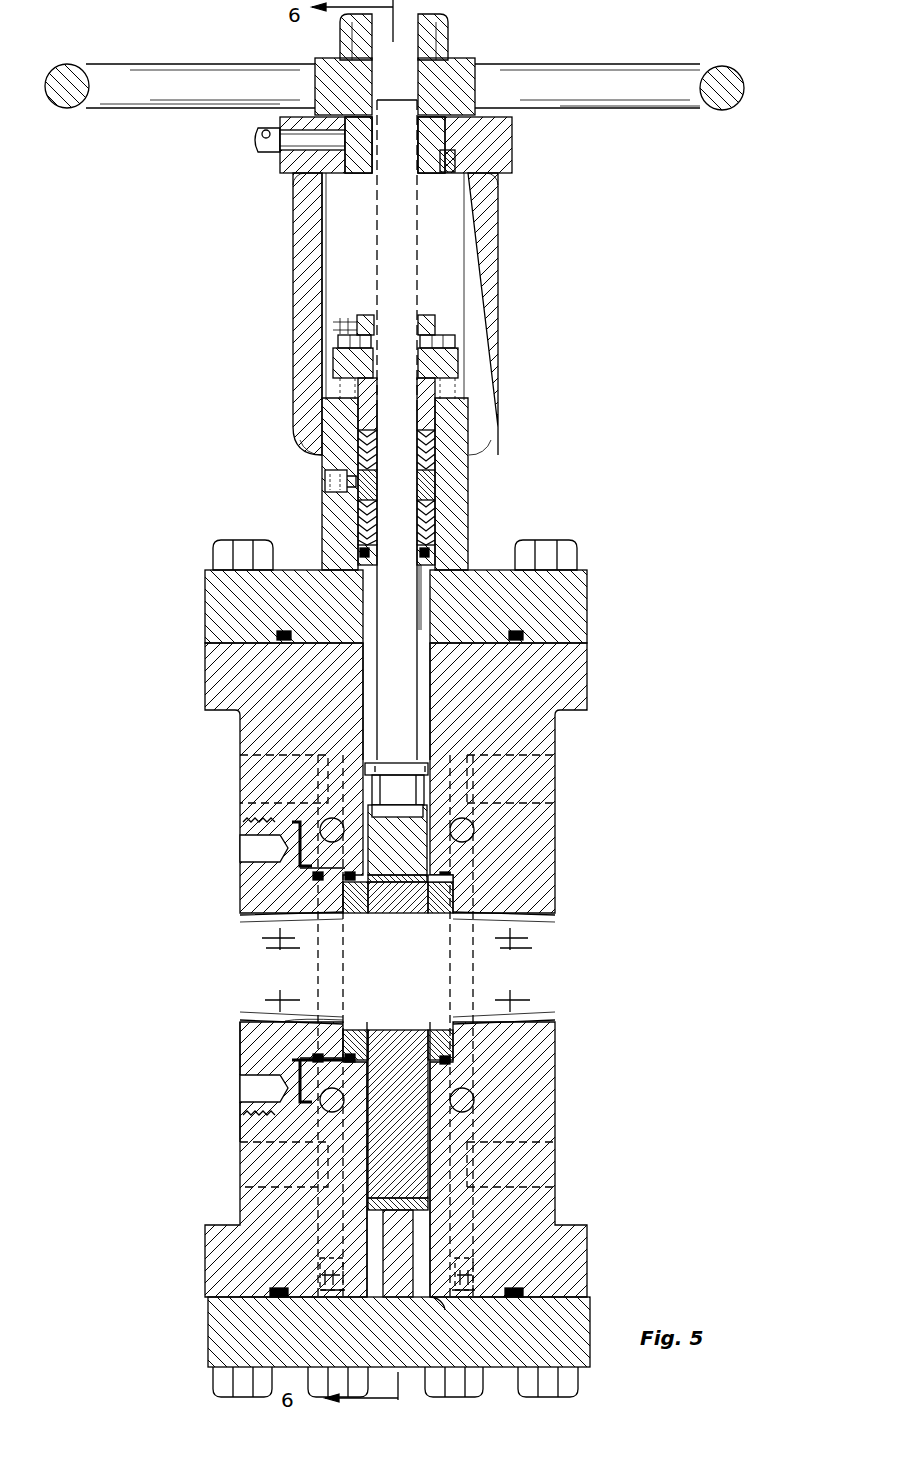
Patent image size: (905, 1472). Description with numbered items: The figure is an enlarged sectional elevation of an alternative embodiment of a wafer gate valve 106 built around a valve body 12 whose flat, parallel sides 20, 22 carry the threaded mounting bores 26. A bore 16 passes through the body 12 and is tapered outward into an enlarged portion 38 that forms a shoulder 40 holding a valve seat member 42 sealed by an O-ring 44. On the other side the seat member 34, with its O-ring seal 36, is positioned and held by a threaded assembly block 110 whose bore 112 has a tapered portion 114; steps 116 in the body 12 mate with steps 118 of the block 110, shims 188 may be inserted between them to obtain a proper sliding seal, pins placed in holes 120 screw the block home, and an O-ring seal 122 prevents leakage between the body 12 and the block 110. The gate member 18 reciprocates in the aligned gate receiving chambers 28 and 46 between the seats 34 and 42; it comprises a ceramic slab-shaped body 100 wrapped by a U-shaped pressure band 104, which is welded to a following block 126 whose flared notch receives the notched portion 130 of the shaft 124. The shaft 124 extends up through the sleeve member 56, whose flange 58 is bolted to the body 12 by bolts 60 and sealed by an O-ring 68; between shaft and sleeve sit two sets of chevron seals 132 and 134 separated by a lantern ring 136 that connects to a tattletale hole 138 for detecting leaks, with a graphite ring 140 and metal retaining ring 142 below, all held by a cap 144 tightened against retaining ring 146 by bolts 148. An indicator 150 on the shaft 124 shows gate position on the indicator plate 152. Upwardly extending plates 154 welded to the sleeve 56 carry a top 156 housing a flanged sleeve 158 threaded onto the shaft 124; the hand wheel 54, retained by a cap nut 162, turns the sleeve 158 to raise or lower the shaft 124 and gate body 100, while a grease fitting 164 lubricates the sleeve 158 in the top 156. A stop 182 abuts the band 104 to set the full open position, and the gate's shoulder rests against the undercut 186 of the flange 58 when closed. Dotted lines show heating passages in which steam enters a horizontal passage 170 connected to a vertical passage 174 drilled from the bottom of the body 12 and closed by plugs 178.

The valve body 12 is at (502, 739).
The bore 16 is at (567, 1005).
The gate member 18 is at (400, 1016).
The side of the body 20 is at (240, 1215).
The side of the body 22 is at (555, 898).
The threaded bores 26 is at (240, 790).
The gate receiving chamber 28 is at (430, 1297).
The valve seating member 34 is at (355, 913).
The O-ring seal 36 is at (368, 1048).
The enlarged portion of bore 38 is at (440, 1080).
The annular shoulder 40 is at (440, 913).
The valve seat member 42 is at (440, 1030).
The O-ring 44 is at (445, 875).
The gate receiving chamber 46 is at (428, 690).
The hand wheel 54 is at (530, 99).
The sleeve member 56 is at (468, 518).
The circumferential flange 58 is at (205, 602).
The bolts 60 is at (264, 548).
The O-ring 68 is at (291, 635).
The slab-shaped body 100 is at (395, 913).
The pressure band 104 is at (398, 1198).
The wafer gate valve 106 is at (553, 523).
The threaded assembly block 110 is at (240, 1062).
The bore 112 is at (240, 1015).
The tapered portion 114 is at (305, 1012).
The steps 116 is at (300, 850).
The steps 118 is at (290, 870).
The holes 120 is at (240, 848).
The O-ring seal 122 is at (240, 912).
The shaft 124 is at (410, 756).
The following block 126 is at (410, 866).
The notched portion 130 is at (386, 823).
The chevron seals 132 is at (417, 532).
The chevron seals 134 is at (377, 445).
The lantern ring 136 is at (390, 476).
The tattletale hole 138 is at (325, 482).
The graphite ring 140 is at (392, 548).
The metal retaining ring 142 is at (425, 568).
The cap 144 is at (458, 365).
The retaining ring 146 is at (392, 390).
The bolts 148 is at (455, 340).
The indicator 150 is at (427, 318).
The indicator plate 152 is at (340, 268).
The upwardly extending plates 154 is at (293, 283).
The top 156 is at (500, 150).
The flanged sleeve 158 is at (442, 174).
The cap nut 162 is at (448, 35).
The grease fitting 164 is at (262, 146).
The horizontal passage 170 is at (474, 1100).
The vertical passage 174 is at (473, 1232).
The plugs 178 is at (475, 1278).
The stop 182 is at (398, 1297).
The undercut 186 is at (417, 648).
The shims 188 is at (313, 876).